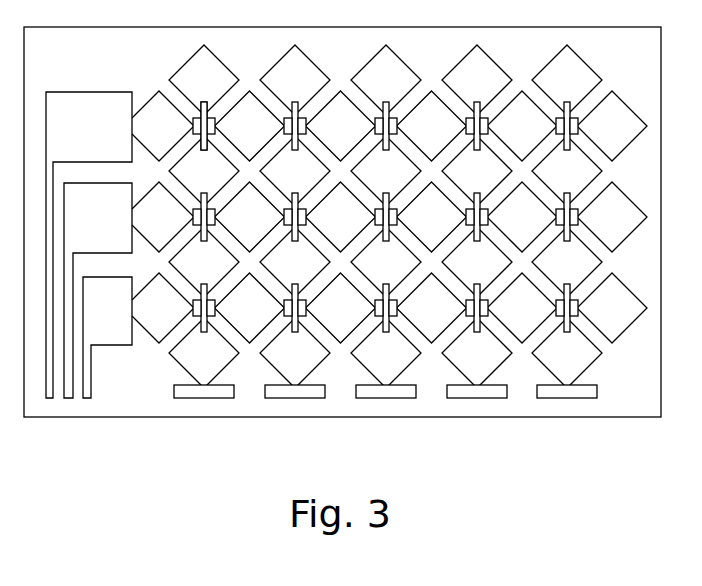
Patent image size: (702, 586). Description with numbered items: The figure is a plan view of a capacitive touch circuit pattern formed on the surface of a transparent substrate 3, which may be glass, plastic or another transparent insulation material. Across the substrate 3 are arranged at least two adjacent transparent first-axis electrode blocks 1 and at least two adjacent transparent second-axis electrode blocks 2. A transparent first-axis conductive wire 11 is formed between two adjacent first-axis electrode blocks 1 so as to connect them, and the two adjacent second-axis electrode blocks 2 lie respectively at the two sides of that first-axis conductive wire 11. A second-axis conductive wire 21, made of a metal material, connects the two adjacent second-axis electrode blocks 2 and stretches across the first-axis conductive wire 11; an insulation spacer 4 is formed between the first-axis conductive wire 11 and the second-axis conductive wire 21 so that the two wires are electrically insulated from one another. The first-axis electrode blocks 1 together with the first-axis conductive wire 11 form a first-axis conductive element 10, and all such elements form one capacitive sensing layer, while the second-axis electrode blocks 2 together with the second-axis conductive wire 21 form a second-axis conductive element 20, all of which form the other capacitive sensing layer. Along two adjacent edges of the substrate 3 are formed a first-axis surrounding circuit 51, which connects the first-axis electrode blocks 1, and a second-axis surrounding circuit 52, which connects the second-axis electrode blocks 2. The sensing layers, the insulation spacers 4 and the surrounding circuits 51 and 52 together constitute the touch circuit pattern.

The first-axis electrode block 1 is at (157, 119).
The second-axis electrode block 2 is at (194, 66).
The substrate 3 is at (532, 407).
The insulation spacer 4 is at (200, 138).
The first-axis conductive element 10 is at (632, 147).
The first-axis conductive wire 11 is at (197, 125).
The second-axis conductive element 20 is at (318, 58).
The second-axis conductive wire 21 is at (209, 104).
The first-axis surrounding circuit 51 is at (78, 103).
The second-axis surrounding circuit 52 is at (280, 393).